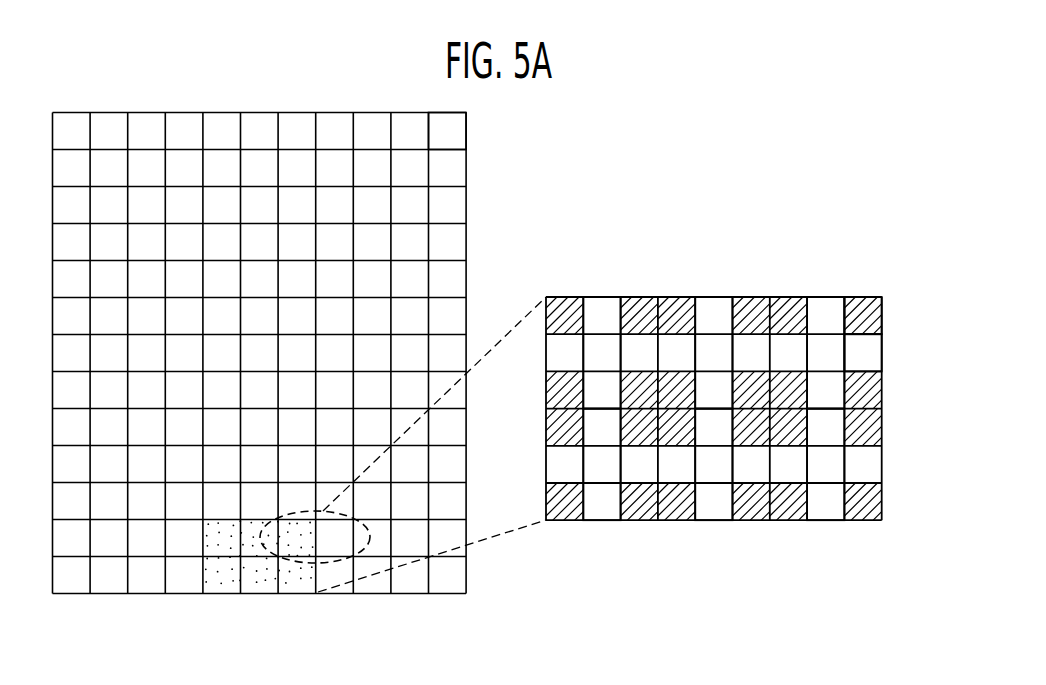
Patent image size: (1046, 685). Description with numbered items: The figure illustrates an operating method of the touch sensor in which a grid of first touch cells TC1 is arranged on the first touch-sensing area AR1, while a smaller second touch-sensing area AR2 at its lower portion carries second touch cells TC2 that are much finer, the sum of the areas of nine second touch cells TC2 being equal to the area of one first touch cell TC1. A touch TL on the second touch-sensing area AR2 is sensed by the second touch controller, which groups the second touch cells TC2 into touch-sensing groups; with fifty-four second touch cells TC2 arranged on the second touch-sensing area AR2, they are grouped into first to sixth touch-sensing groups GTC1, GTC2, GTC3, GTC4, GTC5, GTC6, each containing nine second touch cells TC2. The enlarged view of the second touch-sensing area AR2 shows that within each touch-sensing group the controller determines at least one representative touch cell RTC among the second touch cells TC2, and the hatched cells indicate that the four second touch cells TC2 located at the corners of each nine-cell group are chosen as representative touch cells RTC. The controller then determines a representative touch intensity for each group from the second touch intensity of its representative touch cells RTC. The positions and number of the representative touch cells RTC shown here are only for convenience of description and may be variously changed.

The first touch cell TC1 is at (460, 133).
The first touch-sensing area AR1 is at (467, 202).
The second touch-sensing area AR2 is at (248, 594).
The touch TL is at (328, 563).
The first touch-sensing group GTC1 is at (600, 297).
The second touch-sensing group GTC2 is at (713, 297).
The third touch-sensing group GTC3 is at (820, 297).
The fourth touch-sensing group GTC4 is at (599, 520).
The fifth touch-sensing group GTC5 is at (713, 520).
The sixth touch-sensing group GTC6 is at (820, 520).
The representative touch cell RTC is at (880, 312).
The second touch cell TC2 is at (877, 350).